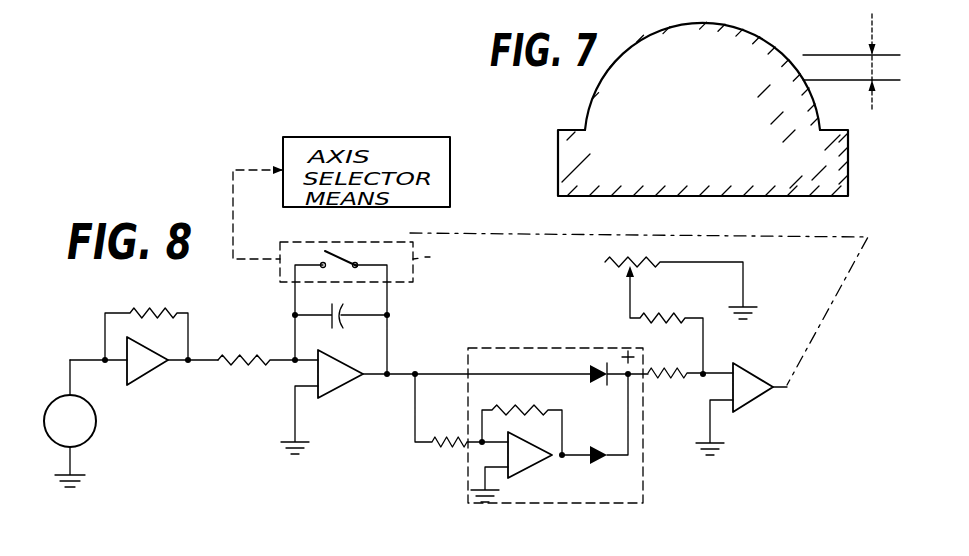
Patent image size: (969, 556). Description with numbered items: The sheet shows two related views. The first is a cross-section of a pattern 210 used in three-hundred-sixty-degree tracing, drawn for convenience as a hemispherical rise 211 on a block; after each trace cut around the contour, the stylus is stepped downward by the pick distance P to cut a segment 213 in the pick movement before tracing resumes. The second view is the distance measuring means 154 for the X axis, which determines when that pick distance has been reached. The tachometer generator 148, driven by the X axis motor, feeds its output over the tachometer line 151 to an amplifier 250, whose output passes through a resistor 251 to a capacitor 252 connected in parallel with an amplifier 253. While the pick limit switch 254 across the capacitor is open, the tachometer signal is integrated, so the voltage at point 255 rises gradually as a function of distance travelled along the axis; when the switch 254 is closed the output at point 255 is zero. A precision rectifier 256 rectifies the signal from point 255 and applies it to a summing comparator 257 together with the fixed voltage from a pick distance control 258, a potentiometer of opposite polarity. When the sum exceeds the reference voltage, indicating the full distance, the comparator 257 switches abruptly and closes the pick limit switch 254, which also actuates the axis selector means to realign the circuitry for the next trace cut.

In FIG. 7, the pattern 210 is at (557, 160).
In FIG. 7, the rise 211 is at (740, 43).
In FIG. 7, the segment 213 is at (808, 79).
In FIG. 8, the tachometer generator 148 is at (96, 434).
In FIG. 8, the tachometer line 151 is at (97, 357).
In FIG. 8, the amplifier 250 is at (137, 380).
In FIG. 8, the resistor 251 is at (258, 368).
In FIG. 8, the capacitor 252 is at (390, 315).
In FIG. 8, the amplifier 253 is at (330, 392).
In FIG. 8, the pick limit switch 254 is at (348, 250).
In FIG. 8, the point 255 is at (393, 366).
In FIG. 8, the precision rectifier 256 is at (645, 480).
In FIG. 8, the summing comparator 257 is at (745, 348).
In FIG. 8, the pick distance control 258 is at (628, 297).
In FIG. 8, the distance measuring means 154 is at (768, 407).